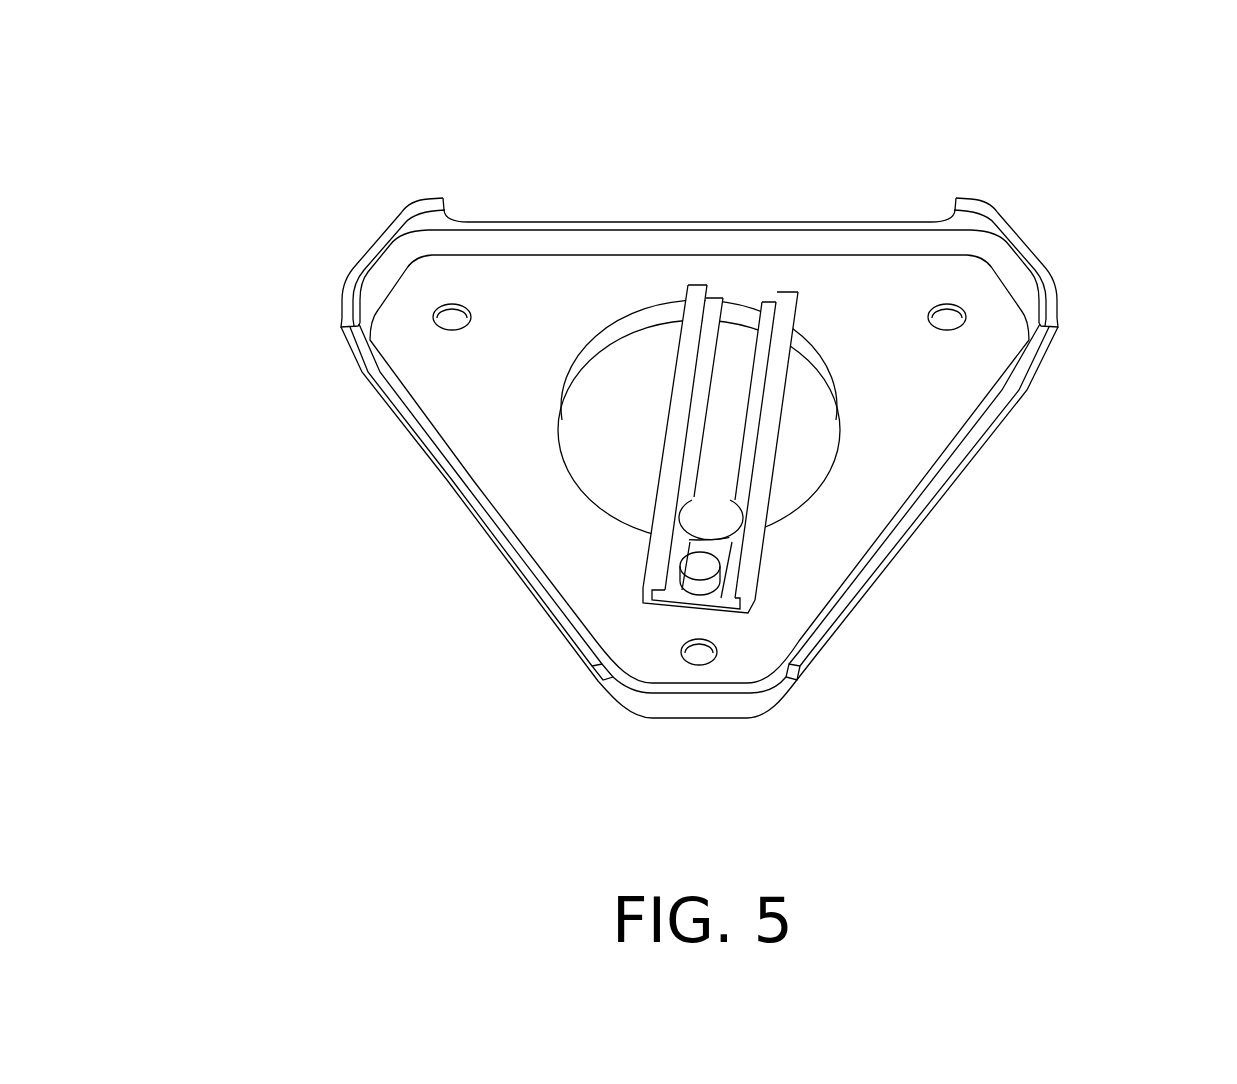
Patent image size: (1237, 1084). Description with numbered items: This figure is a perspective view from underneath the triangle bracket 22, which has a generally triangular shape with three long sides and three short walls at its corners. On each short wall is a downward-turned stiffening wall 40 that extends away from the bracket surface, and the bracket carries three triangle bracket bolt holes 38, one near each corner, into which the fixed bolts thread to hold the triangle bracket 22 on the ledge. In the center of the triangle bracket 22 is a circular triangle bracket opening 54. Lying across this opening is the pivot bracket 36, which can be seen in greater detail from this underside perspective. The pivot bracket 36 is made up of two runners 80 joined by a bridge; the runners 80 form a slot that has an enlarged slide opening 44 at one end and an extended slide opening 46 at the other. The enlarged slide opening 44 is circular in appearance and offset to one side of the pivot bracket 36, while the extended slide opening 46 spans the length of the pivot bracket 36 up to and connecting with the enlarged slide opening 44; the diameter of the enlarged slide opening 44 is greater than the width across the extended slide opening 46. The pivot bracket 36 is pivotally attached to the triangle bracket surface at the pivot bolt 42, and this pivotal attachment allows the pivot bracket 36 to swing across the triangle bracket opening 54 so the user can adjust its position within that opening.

The triangle bracket 22 is at (528, 164).
The pivot bracket 36 is at (657, 412).
The triangle bracket bolt holes 38 is at (452, 322).
The stiffening wall 40 is at (1020, 270).
The pivot bolt 42 is at (702, 580).
The enlarged slide opening 44 is at (710, 520).
The extended slide opening 46 is at (725, 405).
The triangle bracket opening 54 is at (808, 431).
The runners 80 is at (668, 456).